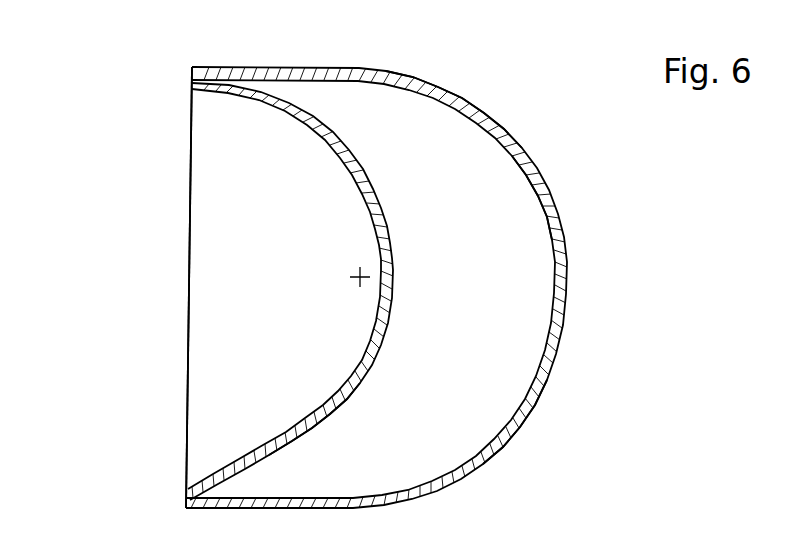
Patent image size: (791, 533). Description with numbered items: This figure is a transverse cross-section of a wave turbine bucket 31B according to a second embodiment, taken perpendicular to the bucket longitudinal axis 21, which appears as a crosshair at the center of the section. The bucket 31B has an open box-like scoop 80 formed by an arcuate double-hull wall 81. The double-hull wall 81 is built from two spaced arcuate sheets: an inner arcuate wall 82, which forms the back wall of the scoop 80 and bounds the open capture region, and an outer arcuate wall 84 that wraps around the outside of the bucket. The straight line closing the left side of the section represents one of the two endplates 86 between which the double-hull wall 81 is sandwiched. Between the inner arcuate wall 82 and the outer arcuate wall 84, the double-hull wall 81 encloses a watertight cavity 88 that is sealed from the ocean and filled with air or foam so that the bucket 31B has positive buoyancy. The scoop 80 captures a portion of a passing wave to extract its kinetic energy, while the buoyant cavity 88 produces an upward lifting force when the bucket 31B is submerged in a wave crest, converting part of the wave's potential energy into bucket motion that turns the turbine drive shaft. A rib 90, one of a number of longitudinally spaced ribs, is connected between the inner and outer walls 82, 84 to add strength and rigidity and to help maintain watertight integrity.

The bucket longitudinal axis 21 is at (357, 287).
The bucket 31B is at (106, 250).
The open box-like scoop 80 is at (215, 358).
The arcuate double-hull wall 81 is at (299, 66).
The inner arcuate wall 82 is at (318, 420).
The outer arcuate wall 84 is at (462, 100).
The endplate 86 is at (190, 157).
The watertight cavity 88 is at (488, 195).
The rib 90 is at (505, 432).